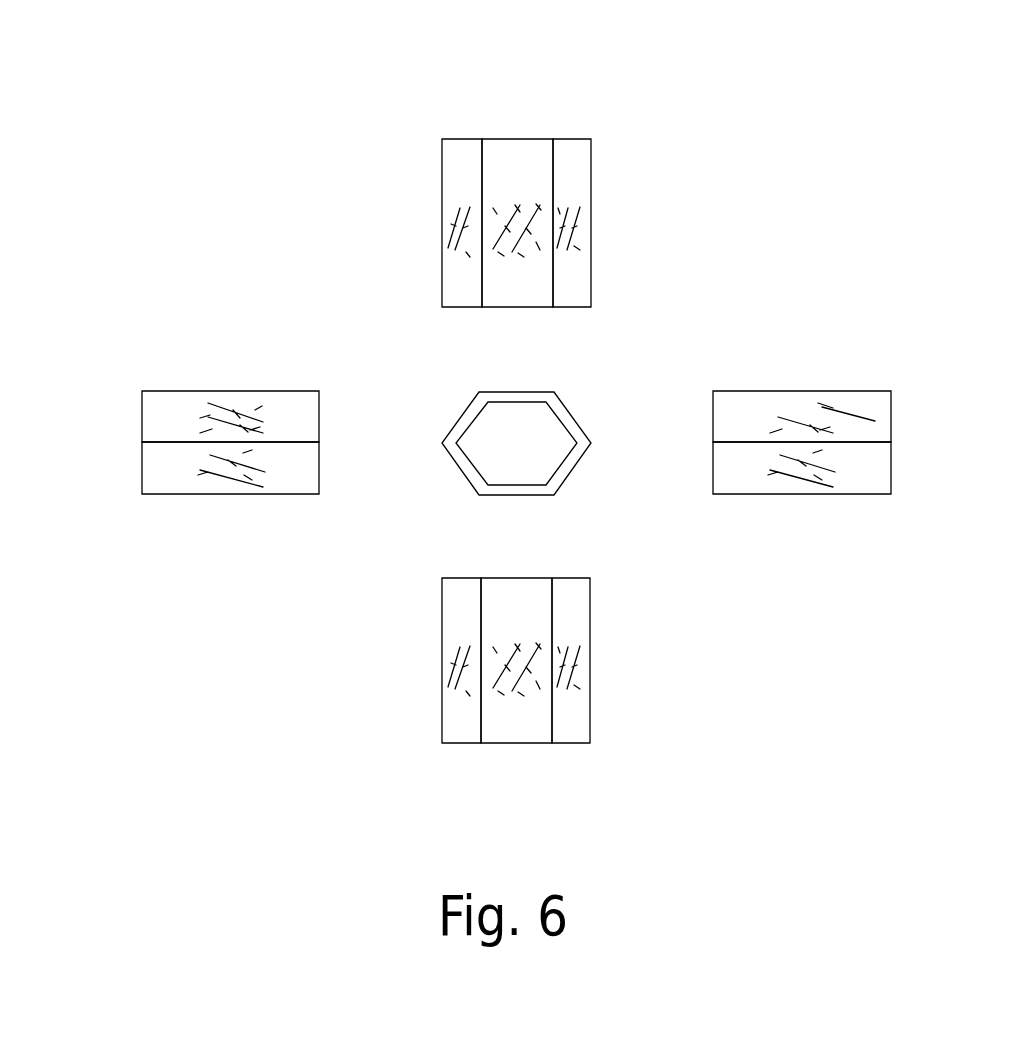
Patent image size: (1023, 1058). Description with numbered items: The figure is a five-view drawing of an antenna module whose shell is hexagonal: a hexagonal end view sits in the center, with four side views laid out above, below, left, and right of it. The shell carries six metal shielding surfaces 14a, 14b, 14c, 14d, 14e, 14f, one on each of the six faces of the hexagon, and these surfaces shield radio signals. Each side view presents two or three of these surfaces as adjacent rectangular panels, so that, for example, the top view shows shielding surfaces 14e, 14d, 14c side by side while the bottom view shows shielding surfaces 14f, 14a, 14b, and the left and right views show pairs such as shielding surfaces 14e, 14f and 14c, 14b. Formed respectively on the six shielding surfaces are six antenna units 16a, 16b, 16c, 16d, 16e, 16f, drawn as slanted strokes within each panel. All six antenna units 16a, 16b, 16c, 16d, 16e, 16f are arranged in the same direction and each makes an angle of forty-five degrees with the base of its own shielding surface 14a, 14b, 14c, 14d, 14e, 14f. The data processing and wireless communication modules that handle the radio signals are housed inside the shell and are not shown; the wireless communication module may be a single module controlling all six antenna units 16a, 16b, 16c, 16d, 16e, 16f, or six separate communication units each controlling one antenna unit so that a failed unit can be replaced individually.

The metal shielding surface 14a is at (518, 737).
The metal shielding surface 14b is at (575, 737).
The metal shielding surface 14c is at (573, 148).
The metal shielding surface 14d is at (518, 148).
The metal shielding surface 14e is at (457, 147).
The metal shielding surface 14f is at (155, 487).
The antenna unit 16a is at (533, 243).
The antenna unit 16b is at (578, 250).
The antenna unit 16c is at (577, 210).
The antenna unit 16d is at (493, 243).
The antenna unit 16e is at (448, 245).
The antenna unit 16f is at (448, 213).